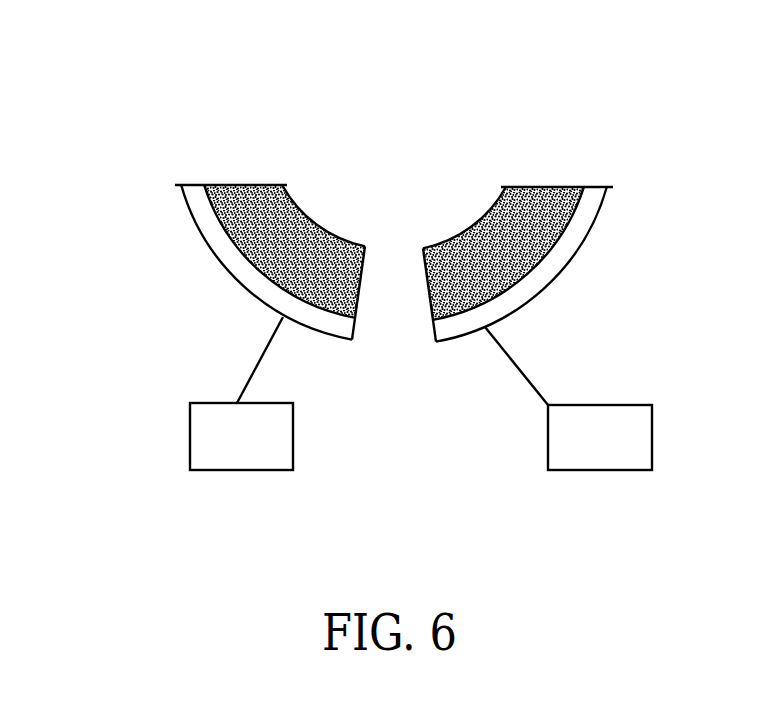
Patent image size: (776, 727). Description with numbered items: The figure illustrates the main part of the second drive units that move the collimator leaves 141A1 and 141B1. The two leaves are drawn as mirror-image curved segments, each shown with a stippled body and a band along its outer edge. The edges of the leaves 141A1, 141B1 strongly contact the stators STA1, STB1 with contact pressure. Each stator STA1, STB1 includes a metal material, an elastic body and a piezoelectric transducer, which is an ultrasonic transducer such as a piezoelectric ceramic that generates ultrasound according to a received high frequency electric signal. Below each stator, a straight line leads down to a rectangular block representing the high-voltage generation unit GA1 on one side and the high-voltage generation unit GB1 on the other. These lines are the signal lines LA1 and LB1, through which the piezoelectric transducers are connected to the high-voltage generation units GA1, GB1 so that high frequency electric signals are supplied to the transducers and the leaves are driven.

The leaf 141A1 is at (268, 185).
The stator STA1 is at (187, 213).
The signal line LA1 is at (250, 370).
The high-voltage generation unit GA1 is at (230, 470).
The leaf 141B1 is at (550, 188).
The stator STB1 is at (548, 288).
The signal line LB1 is at (510, 353).
The high-voltage generation unit GB1 is at (610, 470).